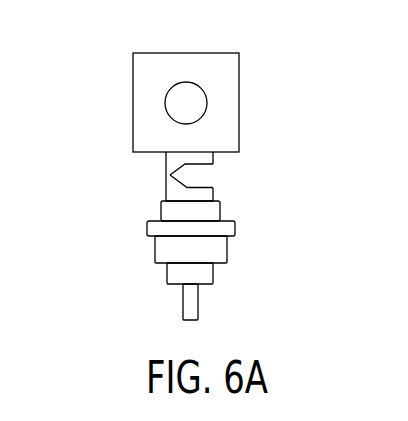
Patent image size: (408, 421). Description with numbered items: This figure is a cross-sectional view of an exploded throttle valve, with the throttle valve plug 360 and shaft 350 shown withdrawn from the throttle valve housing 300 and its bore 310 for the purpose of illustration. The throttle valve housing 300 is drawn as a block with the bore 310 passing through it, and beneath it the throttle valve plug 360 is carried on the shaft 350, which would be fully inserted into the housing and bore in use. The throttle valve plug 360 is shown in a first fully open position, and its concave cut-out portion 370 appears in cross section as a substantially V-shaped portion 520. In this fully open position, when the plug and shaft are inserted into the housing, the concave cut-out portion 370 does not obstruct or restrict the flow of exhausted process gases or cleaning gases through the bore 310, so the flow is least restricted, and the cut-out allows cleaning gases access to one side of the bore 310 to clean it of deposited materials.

The throttle valve housing 300 is at (239, 102).
The bore 310 is at (190, 87).
The throttle valve plug 360 is at (166, 167).
The concave cut-out portion 370 is at (203, 172).
The V-shaped portion 520 is at (188, 188).
The shaft 350 is at (200, 287).